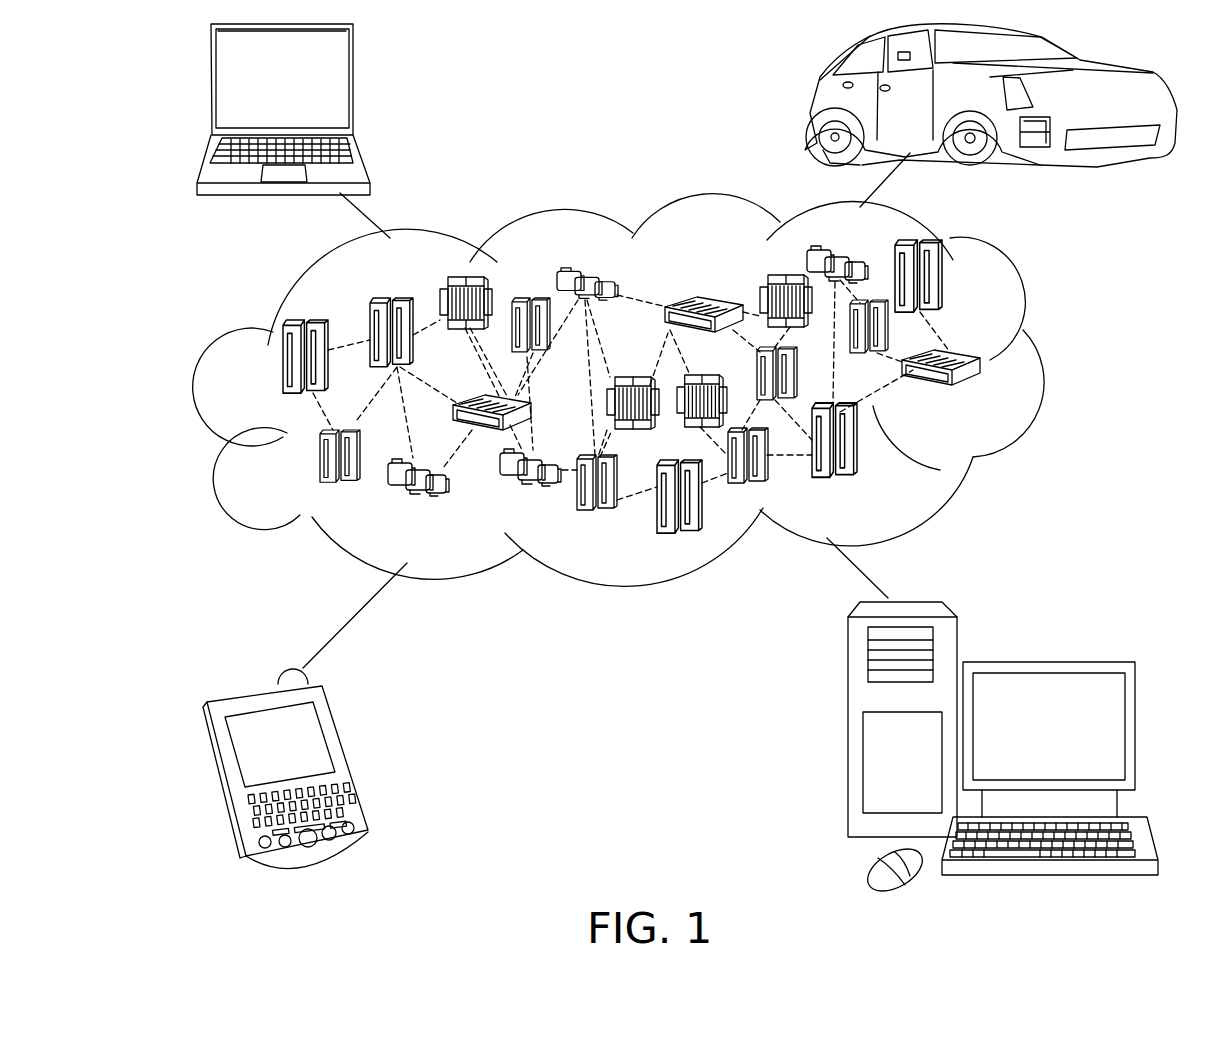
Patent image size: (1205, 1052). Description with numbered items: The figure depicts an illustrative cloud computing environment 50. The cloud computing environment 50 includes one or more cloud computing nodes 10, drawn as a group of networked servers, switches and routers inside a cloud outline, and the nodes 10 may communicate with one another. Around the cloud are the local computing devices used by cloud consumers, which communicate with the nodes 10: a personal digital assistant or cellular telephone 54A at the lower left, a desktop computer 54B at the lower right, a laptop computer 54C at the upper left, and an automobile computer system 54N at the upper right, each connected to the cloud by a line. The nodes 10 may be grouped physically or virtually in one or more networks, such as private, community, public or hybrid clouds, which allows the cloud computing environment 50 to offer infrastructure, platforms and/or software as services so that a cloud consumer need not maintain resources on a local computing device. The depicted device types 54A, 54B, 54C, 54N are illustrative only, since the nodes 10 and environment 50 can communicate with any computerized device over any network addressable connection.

The cloud computing node 10 is at (985, 397).
The cloud computing environment 50 is at (1047, 363).
The personal digital assistant (PDA) or cellular telephone 54A is at (345, 757).
The desktop computer 54B is at (1045, 660).
The laptop computer 54C is at (353, 87).
The automobile computer system 54N is at (815, 103).